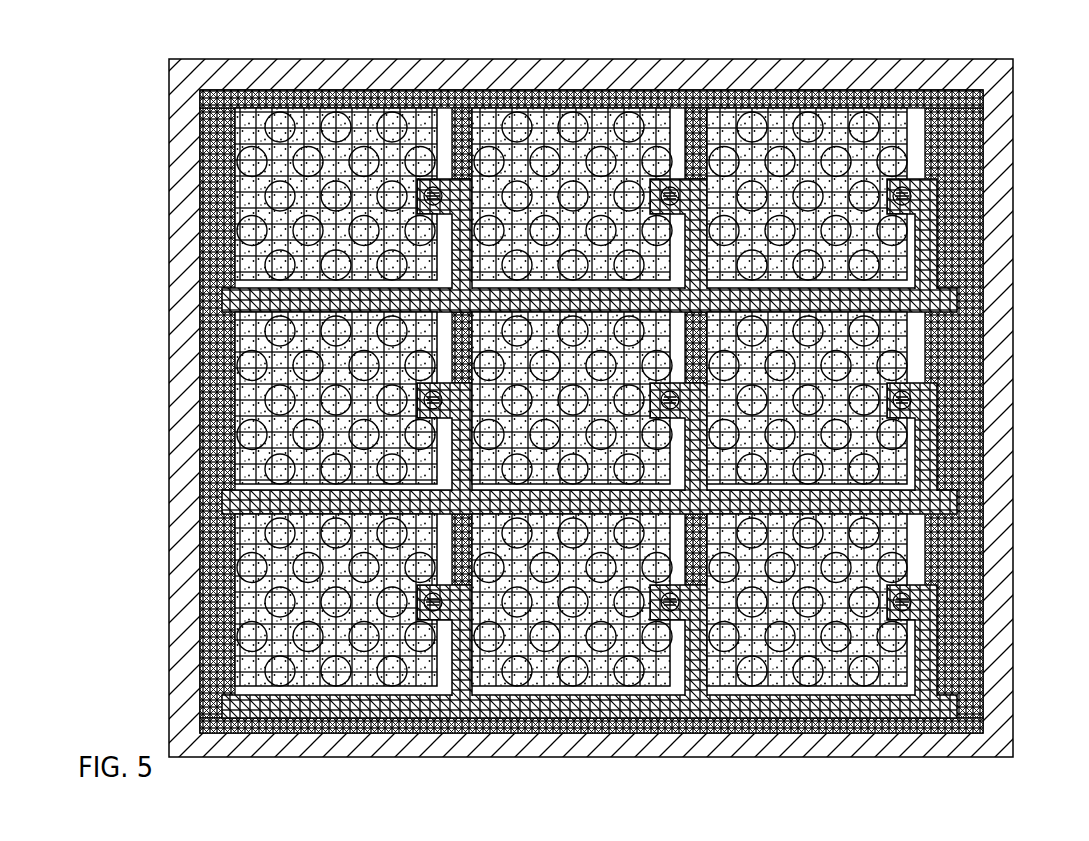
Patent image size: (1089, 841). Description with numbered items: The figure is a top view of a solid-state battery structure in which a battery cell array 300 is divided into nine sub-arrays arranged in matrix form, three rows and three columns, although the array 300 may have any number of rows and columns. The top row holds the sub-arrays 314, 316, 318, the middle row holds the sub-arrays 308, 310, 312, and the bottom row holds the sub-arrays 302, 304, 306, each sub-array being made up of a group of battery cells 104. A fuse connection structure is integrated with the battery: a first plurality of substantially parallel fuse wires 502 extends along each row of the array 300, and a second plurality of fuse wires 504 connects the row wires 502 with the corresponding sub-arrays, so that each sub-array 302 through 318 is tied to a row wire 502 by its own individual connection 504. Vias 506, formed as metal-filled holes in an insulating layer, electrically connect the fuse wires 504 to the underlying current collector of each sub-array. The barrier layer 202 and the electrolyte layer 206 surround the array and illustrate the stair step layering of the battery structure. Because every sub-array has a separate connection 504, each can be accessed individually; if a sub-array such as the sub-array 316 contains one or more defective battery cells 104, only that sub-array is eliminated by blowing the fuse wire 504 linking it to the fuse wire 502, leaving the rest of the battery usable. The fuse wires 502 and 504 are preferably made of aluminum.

The battery cell array 300 is at (125, 52).
The barrier layer 202 is at (958, 82).
The electrolyte layer 206 is at (973, 122).
The battery cells 104 is at (233, 340).
The first plurality of fuse wires 502 is at (225, 299).
The second plurality of fuse wires 504 is at (462, 118).
The vias 506 is at (925, 175).
The sub-array 302 is at (963, 715).
The sub-array 304 is at (658, 678).
The sub-array 306 is at (247, 664).
The sub-array 308 is at (952, 494).
The sub-array 310 is at (655, 473).
The sub-array 312 is at (248, 402).
The sub-array 314 is at (903, 263).
The sub-array 316 is at (597, 117).
The sub-array 318 is at (362, 117).